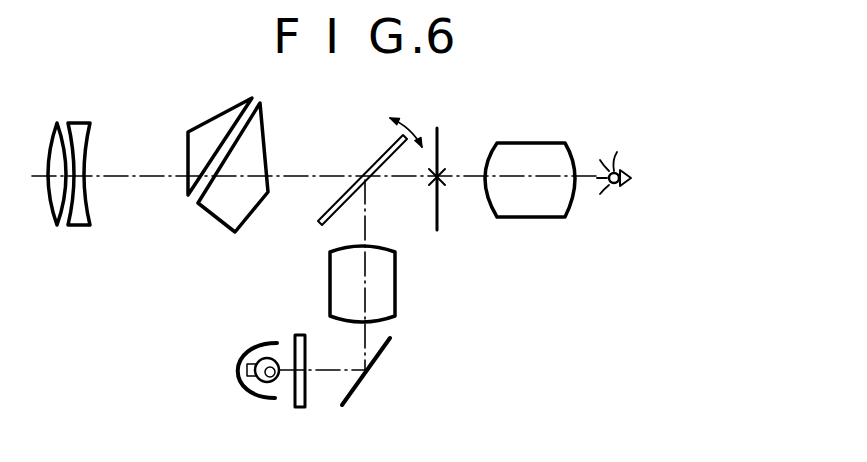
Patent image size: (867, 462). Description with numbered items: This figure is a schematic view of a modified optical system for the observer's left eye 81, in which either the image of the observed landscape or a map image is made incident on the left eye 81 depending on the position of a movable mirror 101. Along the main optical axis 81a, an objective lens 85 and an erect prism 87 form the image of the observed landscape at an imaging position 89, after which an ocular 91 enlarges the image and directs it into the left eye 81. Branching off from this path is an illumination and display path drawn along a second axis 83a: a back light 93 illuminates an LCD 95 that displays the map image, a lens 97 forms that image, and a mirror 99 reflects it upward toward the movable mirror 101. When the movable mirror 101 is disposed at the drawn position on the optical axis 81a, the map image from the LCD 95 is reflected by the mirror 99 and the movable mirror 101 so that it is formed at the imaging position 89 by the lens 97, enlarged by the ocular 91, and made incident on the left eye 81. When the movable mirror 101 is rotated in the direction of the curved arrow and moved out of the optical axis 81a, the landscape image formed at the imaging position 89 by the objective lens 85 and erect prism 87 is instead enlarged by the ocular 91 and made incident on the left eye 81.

The left eye 81 is at (619, 168).
The optical axis 81a is at (143, 170).
The illumination optical axis 83a is at (335, 365).
The objective lens 85 is at (67, 228).
The erect prism 87 is at (215, 222).
The imaging position 89 is at (443, 173).
The ocular 91 is at (549, 143).
The back light 93 is at (242, 390).
The LCD 95 is at (293, 392).
The lens 97 is at (397, 268).
The mirror 99 is at (350, 390).
The movable mirror 101 is at (378, 152).